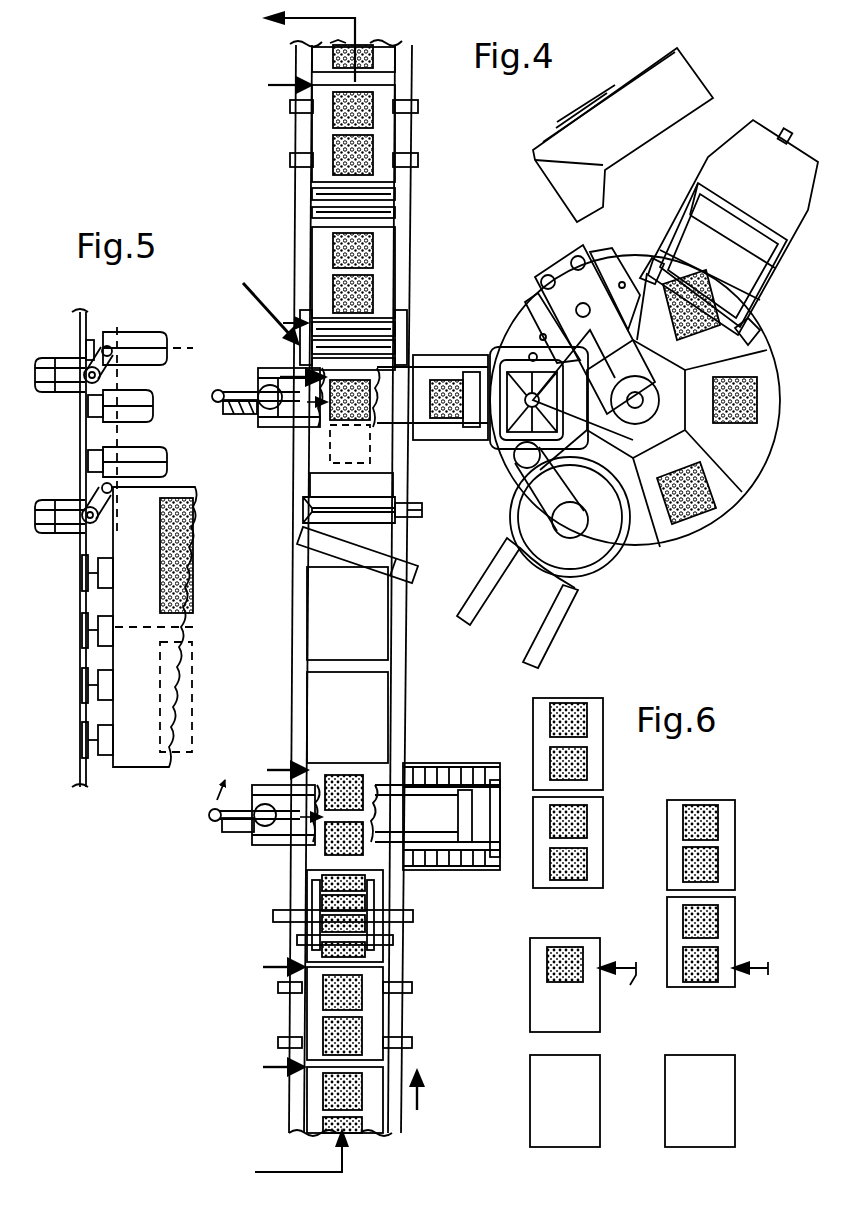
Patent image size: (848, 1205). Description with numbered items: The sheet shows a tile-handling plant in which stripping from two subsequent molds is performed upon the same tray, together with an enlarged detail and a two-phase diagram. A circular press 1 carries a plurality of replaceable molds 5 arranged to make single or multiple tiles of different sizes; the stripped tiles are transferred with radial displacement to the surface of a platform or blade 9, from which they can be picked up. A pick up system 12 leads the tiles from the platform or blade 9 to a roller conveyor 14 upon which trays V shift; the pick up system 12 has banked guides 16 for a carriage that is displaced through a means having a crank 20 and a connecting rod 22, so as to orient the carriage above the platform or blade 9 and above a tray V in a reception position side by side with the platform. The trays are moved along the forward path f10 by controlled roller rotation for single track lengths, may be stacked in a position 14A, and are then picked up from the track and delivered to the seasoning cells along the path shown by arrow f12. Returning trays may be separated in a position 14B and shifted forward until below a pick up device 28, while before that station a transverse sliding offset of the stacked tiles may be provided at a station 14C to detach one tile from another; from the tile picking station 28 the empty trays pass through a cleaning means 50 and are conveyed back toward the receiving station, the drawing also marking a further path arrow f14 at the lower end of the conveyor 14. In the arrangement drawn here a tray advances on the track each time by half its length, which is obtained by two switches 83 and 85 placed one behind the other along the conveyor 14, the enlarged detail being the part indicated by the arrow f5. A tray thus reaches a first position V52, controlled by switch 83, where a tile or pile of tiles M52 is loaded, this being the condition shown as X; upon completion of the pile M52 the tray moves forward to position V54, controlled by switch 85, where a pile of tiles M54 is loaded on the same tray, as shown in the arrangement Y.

In FIG. 4, the circular press 1 is at (635, 419).
In FIG. 4, the replaceable mold 5 is at (722, 492).
In FIG. 4, the platform or blade 9 is at (488, 440).
In FIG. 4, the pick up system 12 is at (280, 428).
In FIG. 4, the roller conveyor 14 is at (416, 78).
In FIG. 4, the stacking position 14A is at (294, 138).
In FIG. 4, the separating position 14B is at (408, 1002).
In FIG. 4, the offset station 14C is at (410, 928).
In FIG. 4, the banked guides 16 is at (440, 425).
In FIG. 4, the crank 20 is at (235, 423).
In FIG. 4, the connecting rod 22 is at (248, 418).
In FIG. 4, the pick up device 28 is at (268, 858).
In FIG. 4, the cleaning means 50 is at (378, 532).
In FIG. 4, the switch 83 is at (218, 392).
In FIG. 5, the switch 83 is at (88, 508).
In FIG. 4, the switch 85 is at (280, 321).
In FIG. 5, the switch 85 is at (91, 343).
In FIG. 5, the tile or pile of tiles M52 is at (185, 584).
In FIG. 4, the pile of tiles M54 is at (371, 162).
In FIG. 6, the pile of tiles M54 is at (702, 975).
In FIG. 4, the first tray position V52 is at (322, 475).
In FIG. 5, the first tray position V52 is at (168, 650).
In FIG. 6, the first tray position V52 is at (545, 1018).
In FIG. 5, the second tray position V54 is at (142, 343).
In FIG. 6, the second tray position V54 is at (735, 933).
In FIG. 4, the tray V is at (315, 707).
In FIG. 4, the detail indication arrow f5 is at (263, 302).
In FIG. 4, the tray forward path arrow f10 is at (423, 1098).
In FIG. 6, the delivery path arrow f12 is at (683, 998).
In FIG. 4, the direction arrow f14 is at (276, 1169).
In FIG. 6, the first stripping phase X is at (565, 1119).
In FIG. 6, the second stripping phase Y is at (700, 1119).